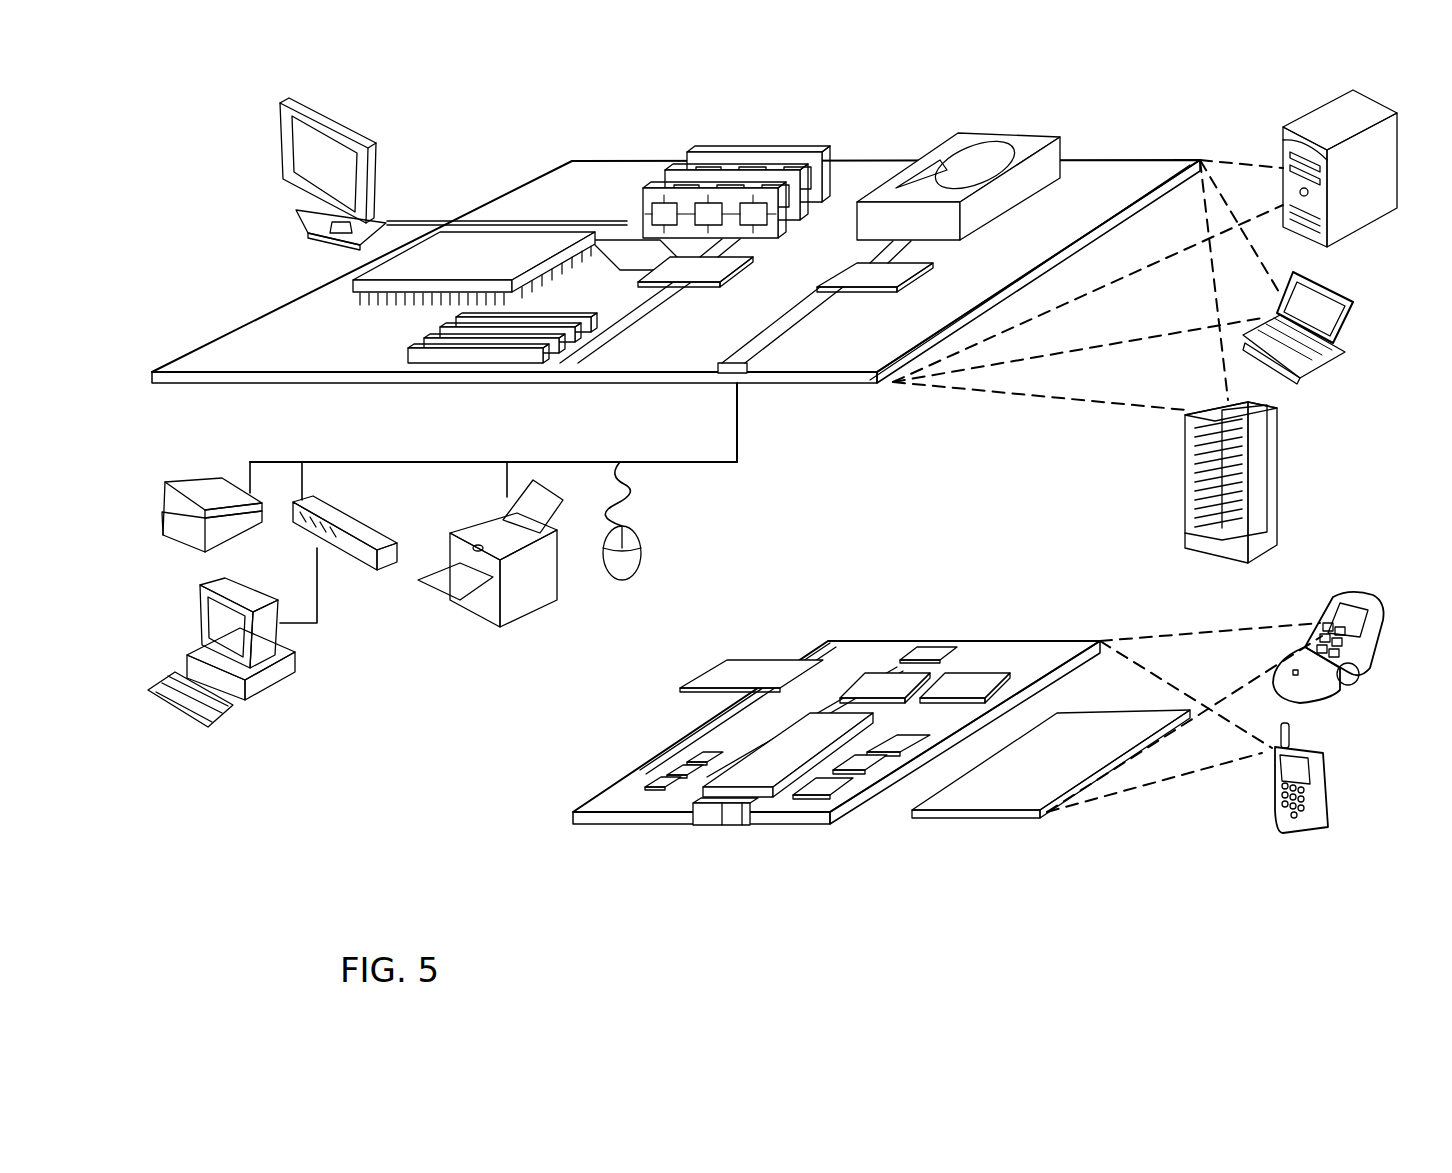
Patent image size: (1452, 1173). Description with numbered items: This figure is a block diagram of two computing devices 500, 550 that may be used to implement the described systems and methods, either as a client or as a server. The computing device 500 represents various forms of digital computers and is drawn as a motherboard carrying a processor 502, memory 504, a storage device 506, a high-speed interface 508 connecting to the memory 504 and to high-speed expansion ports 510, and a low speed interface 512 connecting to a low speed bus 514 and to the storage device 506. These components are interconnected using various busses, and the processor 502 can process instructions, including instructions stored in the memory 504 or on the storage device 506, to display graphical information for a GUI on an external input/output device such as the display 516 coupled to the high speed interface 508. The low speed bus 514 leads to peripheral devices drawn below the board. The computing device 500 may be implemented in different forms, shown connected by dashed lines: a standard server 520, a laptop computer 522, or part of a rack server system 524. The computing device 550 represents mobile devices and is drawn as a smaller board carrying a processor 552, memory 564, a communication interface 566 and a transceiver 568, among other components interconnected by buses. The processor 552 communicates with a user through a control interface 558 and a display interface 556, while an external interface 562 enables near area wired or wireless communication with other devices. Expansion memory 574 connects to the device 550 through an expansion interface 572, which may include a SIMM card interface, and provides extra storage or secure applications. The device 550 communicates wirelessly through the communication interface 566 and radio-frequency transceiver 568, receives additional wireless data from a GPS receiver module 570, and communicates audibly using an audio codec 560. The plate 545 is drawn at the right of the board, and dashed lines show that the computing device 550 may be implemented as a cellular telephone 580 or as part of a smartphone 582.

The computing device 500 is at (489, 126).
The processor 502 is at (357, 284).
The memory 504 is at (709, 152).
The storage device 506 is at (948, 140).
The high-speed interface 508 is at (632, 250).
The high-speed expansion ports 510 is at (410, 352).
The low speed interface 512 is at (855, 265).
The low speed bus 514 is at (747, 374).
The display 516 is at (291, 99).
The standard server 520 is at (1281, 145).
The laptop computer 522 is at (1358, 298).
The rack server system 524 is at (1182, 506).
The antenna module 545 is at (1008, 800).
The computing device 550 is at (542, 834).
The processor 552 is at (760, 777).
The display interface 556 is at (833, 785).
The control interface 558 is at (905, 770).
The audio codec 560 is at (895, 742).
The external interface 562 is at (720, 817).
The memory 564 is at (649, 770).
The communication interface 566 is at (882, 682).
The transceiver 568 is at (965, 682).
The GPS receiver module 570 is at (938, 645).
The expansion interface 572 is at (810, 653).
The expansion memory 574 is at (718, 656).
The cellular telephone 580 is at (1337, 597).
The smartphone 582 is at (1270, 785).